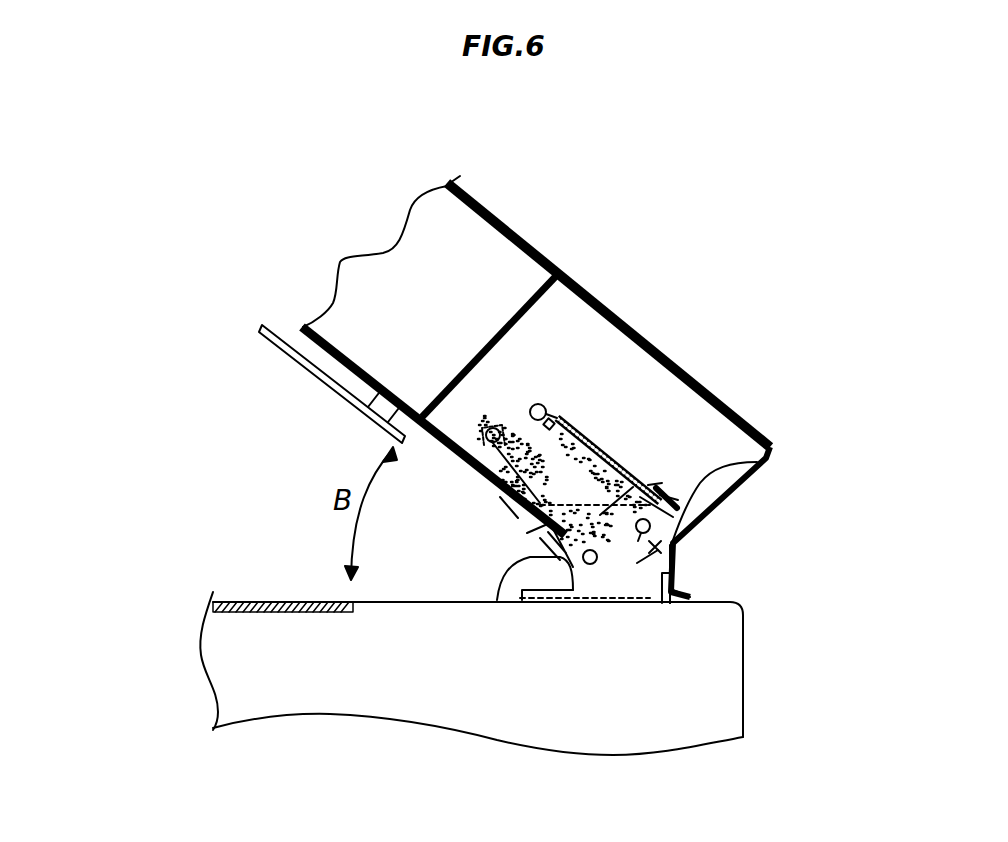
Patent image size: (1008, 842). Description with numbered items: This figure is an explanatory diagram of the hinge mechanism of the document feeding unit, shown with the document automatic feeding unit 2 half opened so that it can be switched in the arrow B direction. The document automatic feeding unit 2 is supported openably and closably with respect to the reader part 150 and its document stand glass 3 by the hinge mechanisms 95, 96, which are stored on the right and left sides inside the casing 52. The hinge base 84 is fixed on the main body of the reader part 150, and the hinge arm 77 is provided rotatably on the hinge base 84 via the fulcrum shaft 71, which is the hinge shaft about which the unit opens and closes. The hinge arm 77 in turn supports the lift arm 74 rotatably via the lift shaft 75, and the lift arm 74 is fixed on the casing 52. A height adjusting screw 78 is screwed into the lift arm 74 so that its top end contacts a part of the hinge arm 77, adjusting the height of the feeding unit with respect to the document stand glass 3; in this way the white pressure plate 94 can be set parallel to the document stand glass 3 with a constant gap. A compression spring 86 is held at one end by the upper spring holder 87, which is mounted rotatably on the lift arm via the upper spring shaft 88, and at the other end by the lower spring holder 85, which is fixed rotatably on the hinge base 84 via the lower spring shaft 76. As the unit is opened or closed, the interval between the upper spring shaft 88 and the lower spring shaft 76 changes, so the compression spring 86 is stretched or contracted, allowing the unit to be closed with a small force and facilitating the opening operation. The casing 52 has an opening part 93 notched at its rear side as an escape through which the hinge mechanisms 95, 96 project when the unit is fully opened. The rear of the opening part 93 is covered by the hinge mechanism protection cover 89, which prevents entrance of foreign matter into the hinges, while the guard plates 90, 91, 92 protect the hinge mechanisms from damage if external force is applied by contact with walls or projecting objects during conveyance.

The document automatic feeding unit 2 is at (334, 225).
The document stand glass 3 is at (247, 600).
The reader part 150 is at (200, 701).
The casing 52 is at (650, 350).
The fulcrum shaft 71 is at (638, 541).
The lift arm 74 is at (460, 372).
The lift shaft 75 is at (545, 408).
The lower spring shaft 76 is at (595, 566).
The hinge arm 77 is at (655, 548).
The height adjusting screw 78 is at (673, 493).
The hinge base 84 is at (572, 587).
The lower spring holder 85 is at (492, 602).
The compression spring 86 is at (545, 538).
The upper spring holder 87 is at (500, 466).
The upper spring shaft 88 is at (495, 428).
The hinge mechanism protection cover 89 is at (707, 520).
The guard plate 90 is at (683, 553).
The guard plate 91 is at (680, 573).
The guard plate 92 is at (690, 593).
The opening part 93 is at (767, 453).
The white pressure plate 94 is at (300, 363).
The hinge mechanism 95 is at (718, 370).
The hinge mechanism 96 is at (630, 437).